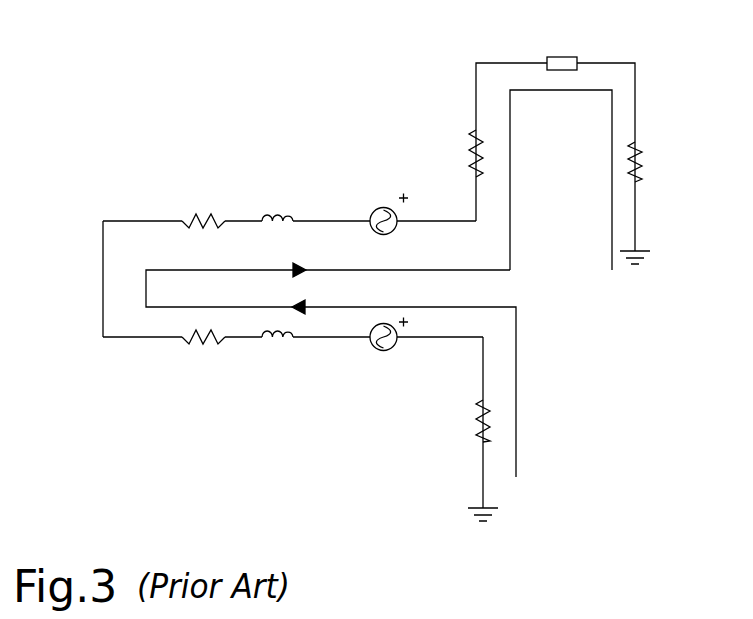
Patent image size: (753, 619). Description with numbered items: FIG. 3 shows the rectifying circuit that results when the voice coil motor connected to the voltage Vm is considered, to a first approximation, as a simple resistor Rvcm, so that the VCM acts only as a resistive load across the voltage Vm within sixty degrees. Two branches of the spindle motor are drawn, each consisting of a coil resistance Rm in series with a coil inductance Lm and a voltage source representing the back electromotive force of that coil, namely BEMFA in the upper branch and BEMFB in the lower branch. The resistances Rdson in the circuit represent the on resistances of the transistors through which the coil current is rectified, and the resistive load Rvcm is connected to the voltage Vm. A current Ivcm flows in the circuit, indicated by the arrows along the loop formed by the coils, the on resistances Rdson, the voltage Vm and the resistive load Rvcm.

The resistance Rm is at (203, 279).
The inductance Lm is at (277, 279).
The BEMF BEMFA is at (385, 229).
The BEMF BEMFB is at (386, 349).
The resistance Rdson is at (432, 153).
The voltage Vm is at (552, 48).
The resistor Rvcm is at (668, 203).
The current Ivcm is at (396, 288).